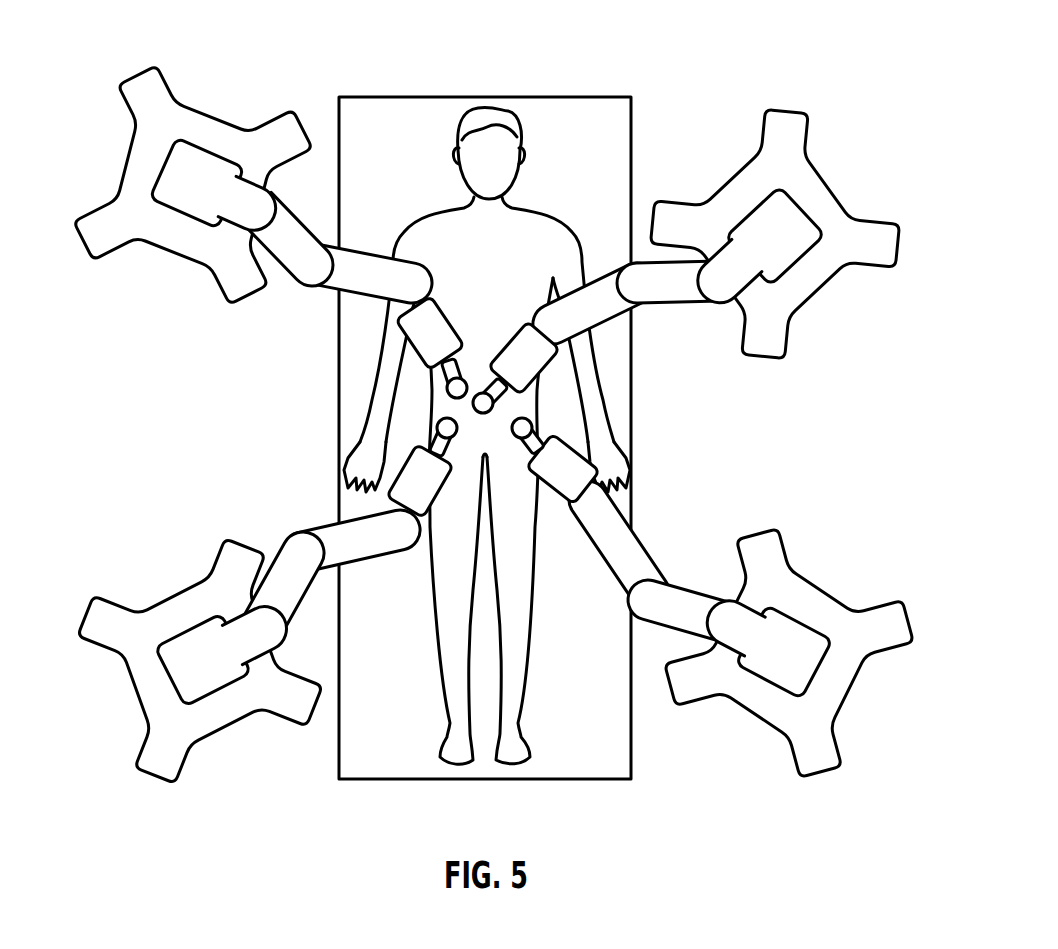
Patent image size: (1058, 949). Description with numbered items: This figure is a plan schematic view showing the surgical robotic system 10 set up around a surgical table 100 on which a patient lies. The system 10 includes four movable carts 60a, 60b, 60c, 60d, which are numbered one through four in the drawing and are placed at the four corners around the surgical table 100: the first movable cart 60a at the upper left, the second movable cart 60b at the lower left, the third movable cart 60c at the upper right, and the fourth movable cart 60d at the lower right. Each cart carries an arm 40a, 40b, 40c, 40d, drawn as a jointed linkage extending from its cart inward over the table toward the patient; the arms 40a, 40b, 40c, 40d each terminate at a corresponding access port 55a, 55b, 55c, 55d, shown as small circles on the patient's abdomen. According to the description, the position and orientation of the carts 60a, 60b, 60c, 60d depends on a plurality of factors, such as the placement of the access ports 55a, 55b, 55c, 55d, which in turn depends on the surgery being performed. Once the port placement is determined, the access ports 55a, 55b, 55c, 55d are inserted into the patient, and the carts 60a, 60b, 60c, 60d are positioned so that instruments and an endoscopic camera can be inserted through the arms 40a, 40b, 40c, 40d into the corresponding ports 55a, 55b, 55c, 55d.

The surgical robotic system 10 is at (833, 33).
The surgical table 100 is at (632, 118).
The movable cart 60a is at (125, 160).
The movable cart 60b is at (134, 697).
The movable cart 60c is at (838, 188).
The movable cart 60d is at (855, 690).
The robotic arm (robot 1) 40a is at (320, 268).
The robotic arm (robot 2) 40b is at (308, 560).
The robotic arm (robot 3) 40c is at (596, 292).
The robotic arm (robot 4) 40d is at (627, 553).
The access port 55a is at (457, 378).
The access port 55b is at (437, 428).
The access port 55c is at (485, 393).
The access port 55d is at (522, 440).